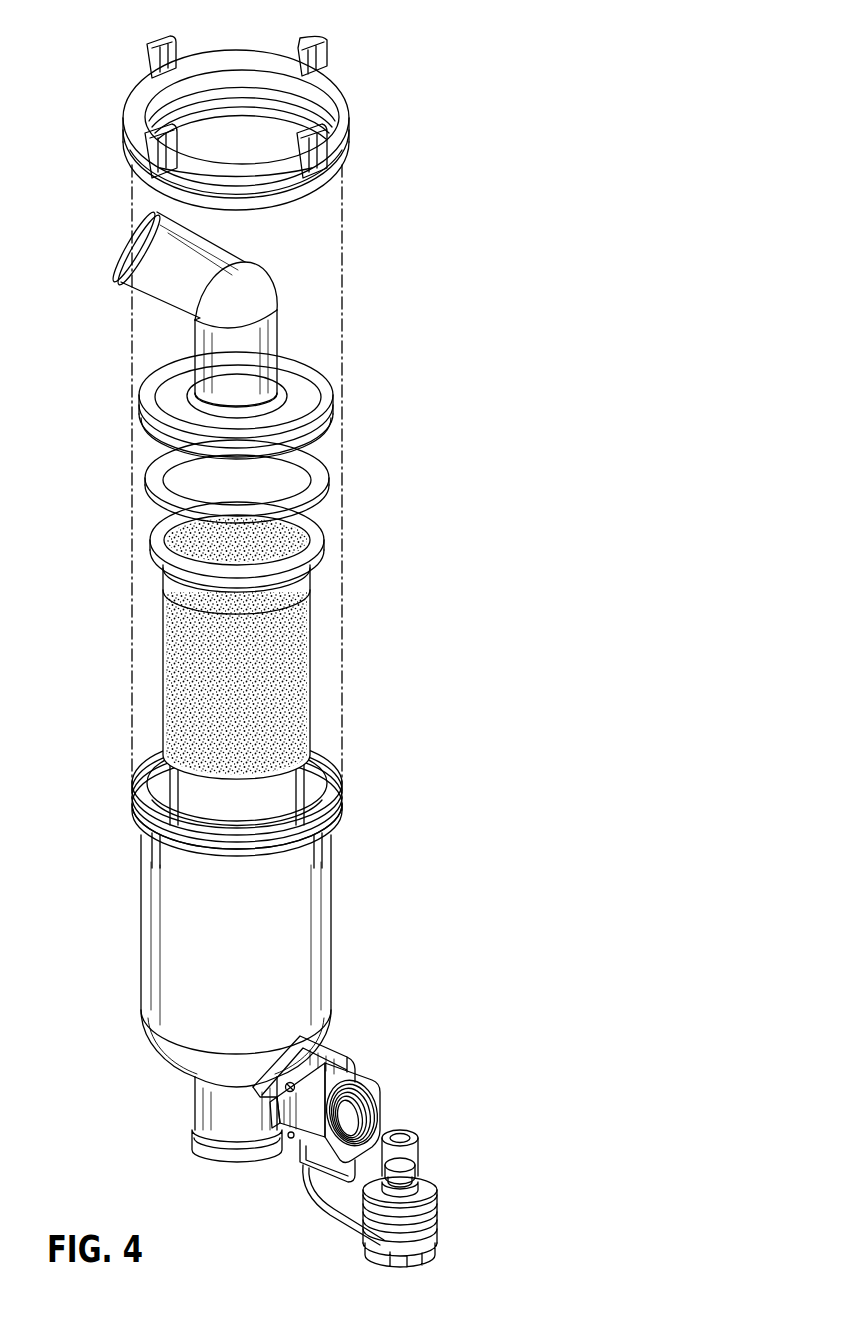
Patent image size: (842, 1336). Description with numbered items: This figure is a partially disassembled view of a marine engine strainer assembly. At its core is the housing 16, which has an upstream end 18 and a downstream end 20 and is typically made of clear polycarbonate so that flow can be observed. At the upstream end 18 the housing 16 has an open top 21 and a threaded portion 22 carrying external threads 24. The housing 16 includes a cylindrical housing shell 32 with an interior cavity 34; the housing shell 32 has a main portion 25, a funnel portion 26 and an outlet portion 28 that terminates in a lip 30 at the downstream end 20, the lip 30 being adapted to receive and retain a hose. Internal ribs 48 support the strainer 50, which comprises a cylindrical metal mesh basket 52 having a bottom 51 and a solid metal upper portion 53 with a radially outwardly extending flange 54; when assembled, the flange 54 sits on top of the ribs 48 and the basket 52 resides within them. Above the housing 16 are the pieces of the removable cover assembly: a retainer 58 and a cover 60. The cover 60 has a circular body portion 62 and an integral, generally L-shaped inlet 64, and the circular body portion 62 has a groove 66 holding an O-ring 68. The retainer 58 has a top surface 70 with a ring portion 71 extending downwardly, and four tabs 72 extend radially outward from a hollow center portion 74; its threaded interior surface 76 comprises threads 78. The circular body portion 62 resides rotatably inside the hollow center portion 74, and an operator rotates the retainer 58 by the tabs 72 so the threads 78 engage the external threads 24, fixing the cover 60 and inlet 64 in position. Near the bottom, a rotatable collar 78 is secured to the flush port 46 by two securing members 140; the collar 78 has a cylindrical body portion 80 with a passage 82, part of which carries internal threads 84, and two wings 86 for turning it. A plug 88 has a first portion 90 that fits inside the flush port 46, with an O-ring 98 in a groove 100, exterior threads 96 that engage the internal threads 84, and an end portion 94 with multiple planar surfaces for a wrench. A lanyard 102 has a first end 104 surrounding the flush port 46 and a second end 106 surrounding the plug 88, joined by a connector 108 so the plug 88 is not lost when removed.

The housing 16 is at (237, 956).
The upstream end 18 is at (372, 768).
The downstream end 20 is at (209, 1136).
The open top 21 is at (167, 746).
The threaded portion 22 is at (125, 757).
The external threads 24 is at (337, 801).
The main portion 25 is at (147, 905).
The funnel portion 26 is at (232, 1087).
The outlet portion 28 is at (199, 1117).
The lip 30 is at (218, 1162).
The housing shell 32 is at (252, 966).
The interior cavity 34 is at (234, 807).
The flush port 46 is at (286, 1088).
The ribs 48 is at (150, 833).
The strainer 50 is at (245, 640).
The bottom 51 is at (302, 772).
The mesh basket 52 is at (256, 665).
The upper portion 53 is at (306, 574).
The flange 54 is at (326, 543).
The retainer 58 is at (352, 125).
The cover 60 is at (302, 352).
The circular body portion 62 is at (303, 393).
The inlet 64 is at (198, 258).
The groove 66 is at (272, 452).
The O-ring 68 is at (326, 471).
The top surface 70 is at (150, 118).
The ring portion 71 is at (345, 148).
The tabs 72 is at (148, 55).
The hollow center portion 74 is at (236, 129).
The threaded interior surface 76 is at (232, 86).
The threads / collar 78 is at (351, 645).
The cylindrical body portion 80 is at (316, 1100).
The passage 82 is at (368, 1112).
The internal threads 84 is at (372, 1126).
The wings 86 is at (338, 1056).
The plug 88 is at (444, 1200).
The first portion 90 is at (416, 1163).
The end portion 94 is at (426, 1259).
The exterior threads 96 is at (440, 1228).
The O-ring 98 is at (419, 1136).
The groove 100 is at (416, 1179).
The lanyard 102 is at (328, 1217).
The first end 104 is at (280, 1111).
The second end 106 is at (370, 1245).
The connector 108 is at (340, 1210).
The securing members 140 is at (290, 1082).